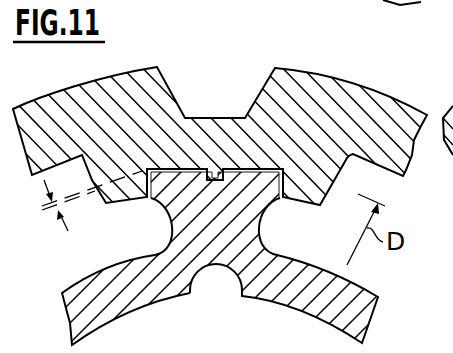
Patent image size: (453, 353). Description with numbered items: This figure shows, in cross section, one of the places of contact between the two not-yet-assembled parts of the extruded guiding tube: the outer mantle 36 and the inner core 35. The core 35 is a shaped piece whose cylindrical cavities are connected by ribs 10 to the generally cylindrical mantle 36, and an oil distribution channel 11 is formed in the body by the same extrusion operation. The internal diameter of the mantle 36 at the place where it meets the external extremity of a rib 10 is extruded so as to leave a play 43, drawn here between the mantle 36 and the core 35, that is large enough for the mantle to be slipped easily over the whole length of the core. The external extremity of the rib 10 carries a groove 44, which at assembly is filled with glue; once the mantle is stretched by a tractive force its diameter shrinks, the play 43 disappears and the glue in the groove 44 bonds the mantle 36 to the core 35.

The mantle 36 is at (327, 97).
The rib 10 is at (226, 176).
The core 35 is at (123, 299).
The oil distribution channel 11 is at (233, 267).
The groove 44 is at (214, 174).
The play 43 is at (53, 208).